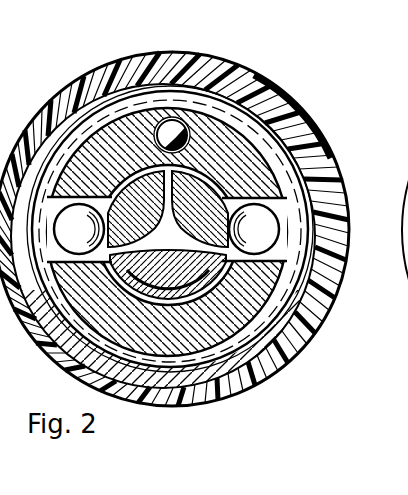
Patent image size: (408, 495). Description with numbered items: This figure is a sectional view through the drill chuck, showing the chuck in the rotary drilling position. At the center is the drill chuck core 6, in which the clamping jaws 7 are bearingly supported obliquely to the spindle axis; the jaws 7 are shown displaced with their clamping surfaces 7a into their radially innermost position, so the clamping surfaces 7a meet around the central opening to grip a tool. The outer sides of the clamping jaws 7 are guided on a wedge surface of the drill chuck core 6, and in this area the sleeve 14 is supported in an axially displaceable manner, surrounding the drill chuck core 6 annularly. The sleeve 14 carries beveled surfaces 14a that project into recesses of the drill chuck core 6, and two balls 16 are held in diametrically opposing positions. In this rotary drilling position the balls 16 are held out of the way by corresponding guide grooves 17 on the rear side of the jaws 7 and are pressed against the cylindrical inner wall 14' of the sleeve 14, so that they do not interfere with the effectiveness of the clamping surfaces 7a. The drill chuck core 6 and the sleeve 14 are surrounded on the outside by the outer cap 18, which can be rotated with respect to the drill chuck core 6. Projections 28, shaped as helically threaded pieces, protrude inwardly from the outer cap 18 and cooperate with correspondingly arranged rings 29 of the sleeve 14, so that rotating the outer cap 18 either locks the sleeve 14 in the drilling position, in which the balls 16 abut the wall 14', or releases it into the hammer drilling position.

The drill chuck core 6 is at (257, 298).
The clamping jaws 7 is at (141, 165).
The clamping surfaces 7a is at (182, 117).
The sleeve 14 is at (174, 220).
The cylindrical inner wall 14' is at (180, 345).
The beveled surfaces 14a is at (284, 253).
The balls 16 is at (265, 220).
The guide grooves 17 is at (167, 161).
The outer cap 18 is at (326, 157).
The projections 28 is at (401, 230).
The rings 29 is at (93, 117).